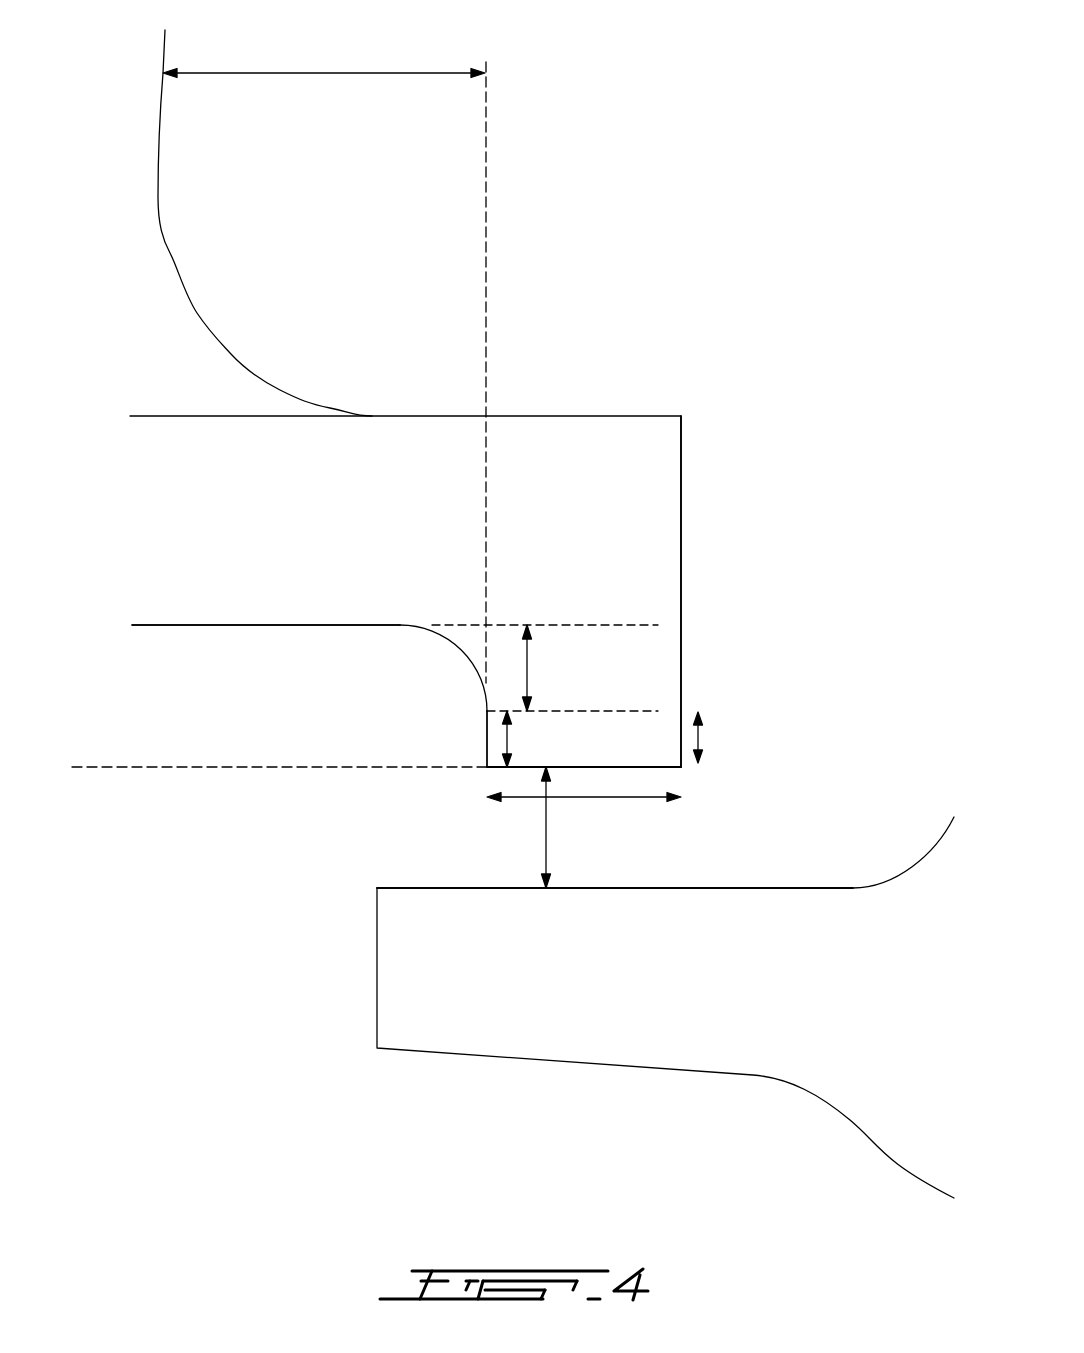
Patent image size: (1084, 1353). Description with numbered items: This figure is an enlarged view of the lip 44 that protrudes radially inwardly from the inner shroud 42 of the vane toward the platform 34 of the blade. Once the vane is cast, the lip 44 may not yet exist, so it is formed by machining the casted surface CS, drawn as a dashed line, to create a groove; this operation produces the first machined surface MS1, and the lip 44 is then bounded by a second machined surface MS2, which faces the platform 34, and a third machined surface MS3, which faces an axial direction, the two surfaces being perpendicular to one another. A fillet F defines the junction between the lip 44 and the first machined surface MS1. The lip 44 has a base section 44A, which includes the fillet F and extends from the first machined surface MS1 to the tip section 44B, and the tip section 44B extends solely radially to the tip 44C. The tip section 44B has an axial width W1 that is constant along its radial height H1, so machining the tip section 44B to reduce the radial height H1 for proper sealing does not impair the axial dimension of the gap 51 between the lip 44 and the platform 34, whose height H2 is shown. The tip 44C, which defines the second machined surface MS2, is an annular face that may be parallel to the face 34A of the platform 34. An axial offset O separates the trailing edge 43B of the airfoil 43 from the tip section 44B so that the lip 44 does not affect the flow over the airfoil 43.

The airfoil 43 is at (118, 251).
The trailing edge 43B is at (160, 127).
The axial offset O is at (323, 72).
The inner shroud 42 is at (163, 522).
The first machined surface MS1 is at (225, 625).
The fillet F is at (458, 643).
The third machined surface MS3 is at (681, 580).
The second machined surface MS2 is at (582, 767).
The lip 44 is at (729, 672).
The base section 44A is at (527, 668).
The tip section 44B is at (507, 736).
The tip 44C is at (497, 768).
The radial height H1 is at (700, 738).
The axial width W1 is at (583, 797).
The height of the gap H2 is at (545, 840).
The casted surface CS is at (172, 767).
The platform 34 is at (522, 997).
The face of the platform 34A is at (612, 890).
The gap 51 is at (414, 863).